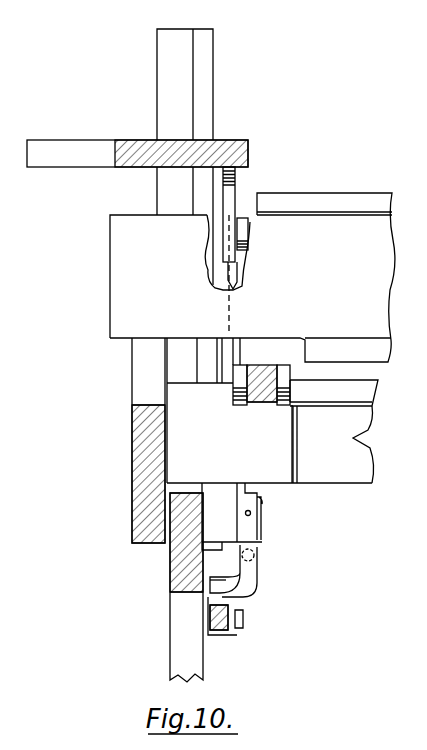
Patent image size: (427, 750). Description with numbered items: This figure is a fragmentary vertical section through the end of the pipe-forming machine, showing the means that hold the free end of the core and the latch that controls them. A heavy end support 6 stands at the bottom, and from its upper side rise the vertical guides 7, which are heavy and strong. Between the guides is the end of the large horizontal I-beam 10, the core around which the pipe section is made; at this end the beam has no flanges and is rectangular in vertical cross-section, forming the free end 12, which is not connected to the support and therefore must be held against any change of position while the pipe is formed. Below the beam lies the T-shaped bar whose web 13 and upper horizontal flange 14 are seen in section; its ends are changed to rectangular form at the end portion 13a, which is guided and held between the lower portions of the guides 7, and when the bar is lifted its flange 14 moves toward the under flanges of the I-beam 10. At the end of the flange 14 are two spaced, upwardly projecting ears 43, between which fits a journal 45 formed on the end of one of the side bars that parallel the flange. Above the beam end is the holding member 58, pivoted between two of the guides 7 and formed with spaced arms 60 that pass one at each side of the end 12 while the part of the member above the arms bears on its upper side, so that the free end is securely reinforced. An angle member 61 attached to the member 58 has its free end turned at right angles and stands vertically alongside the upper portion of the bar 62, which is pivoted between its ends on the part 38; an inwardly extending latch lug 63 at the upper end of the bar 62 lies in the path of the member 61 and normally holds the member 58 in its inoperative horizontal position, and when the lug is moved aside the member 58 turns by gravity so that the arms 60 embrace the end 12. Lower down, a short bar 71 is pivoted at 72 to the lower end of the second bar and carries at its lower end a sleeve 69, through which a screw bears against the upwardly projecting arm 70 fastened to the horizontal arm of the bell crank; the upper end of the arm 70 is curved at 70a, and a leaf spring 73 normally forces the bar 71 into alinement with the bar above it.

The end support 6 is at (176, 603).
The guide 7 is at (193, 97).
The I-beam 10 is at (355, 208).
The free end of the beam 12 is at (119, 250).
The web 13 is at (353, 438).
The rectangular end portion 13a is at (197, 395).
The upper horizontal flange 14 is at (337, 385).
The part 38 is at (268, 350).
The ear 43 is at (283, 368).
The journal 45 is at (266, 397).
The holding member 58 is at (210, 139).
The arm 60 is at (43, 150).
The angle member 61 is at (233, 192).
The bar 62 is at (243, 285).
The latch lug 63 is at (244, 230).
The sleeve 69 is at (255, 556).
The upwardly projecting arm 70 is at (257, 583).
The curved upper end 70a is at (242, 565).
The short bar 71 is at (262, 543).
The pivot 72 is at (246, 513).
The leaf spring 73 is at (262, 507).